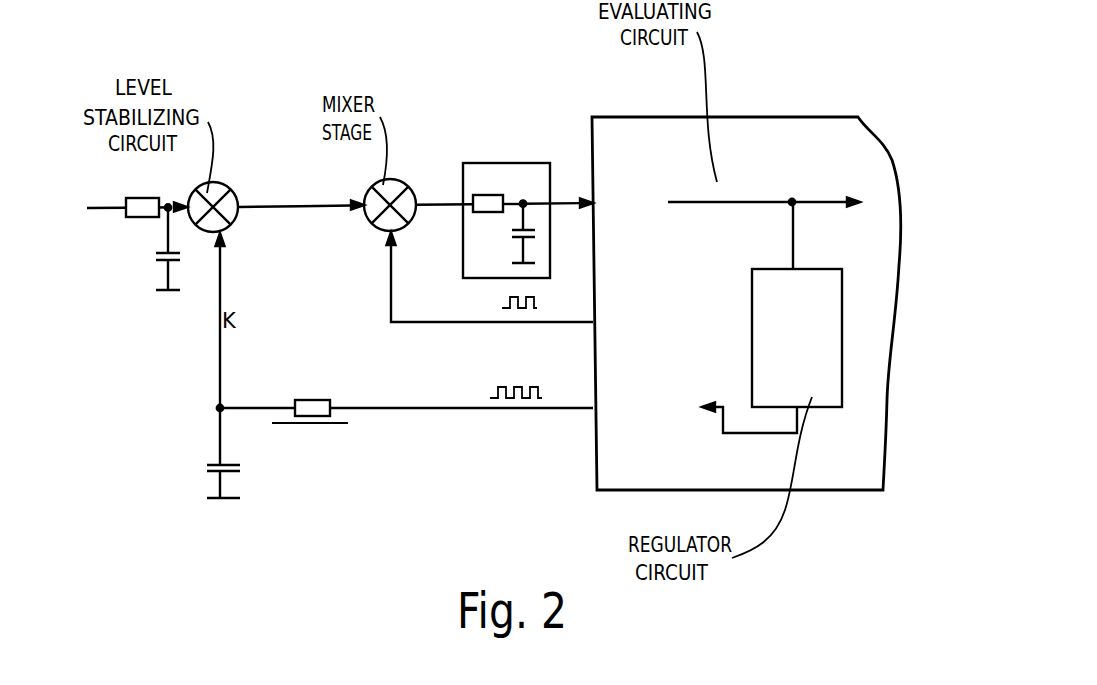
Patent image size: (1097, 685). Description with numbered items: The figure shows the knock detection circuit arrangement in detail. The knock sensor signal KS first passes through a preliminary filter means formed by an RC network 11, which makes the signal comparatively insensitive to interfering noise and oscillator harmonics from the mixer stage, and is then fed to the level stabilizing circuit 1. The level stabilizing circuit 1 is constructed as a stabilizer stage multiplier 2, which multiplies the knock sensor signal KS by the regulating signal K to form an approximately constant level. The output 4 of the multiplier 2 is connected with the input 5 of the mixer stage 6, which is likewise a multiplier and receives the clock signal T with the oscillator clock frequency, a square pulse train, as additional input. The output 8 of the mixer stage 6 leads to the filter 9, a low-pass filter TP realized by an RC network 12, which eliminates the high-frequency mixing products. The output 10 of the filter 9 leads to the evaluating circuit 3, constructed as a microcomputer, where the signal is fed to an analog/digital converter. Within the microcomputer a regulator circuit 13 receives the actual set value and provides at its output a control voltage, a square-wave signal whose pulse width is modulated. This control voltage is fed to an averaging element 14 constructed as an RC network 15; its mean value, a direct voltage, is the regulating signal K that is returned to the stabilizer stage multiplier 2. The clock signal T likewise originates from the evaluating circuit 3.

The level stabilizing circuit 1 is at (219, 176).
The multiplier 2 is at (219, 226).
The evaluating circuit 3 is at (746, 260).
The output 4 is at (253, 205).
The input 5 is at (328, 208).
The mixer stage 6 is at (392, 164).
The output 8 is at (428, 202).
The filter 9 is at (455, 223).
The output 10 is at (560, 208).
The RC network 11 is at (148, 236).
The RC network 12 is at (532, 186).
The regulator circuit 13 is at (773, 348).
The averaging element 14 is at (250, 474).
The RC network 15 is at (191, 421).